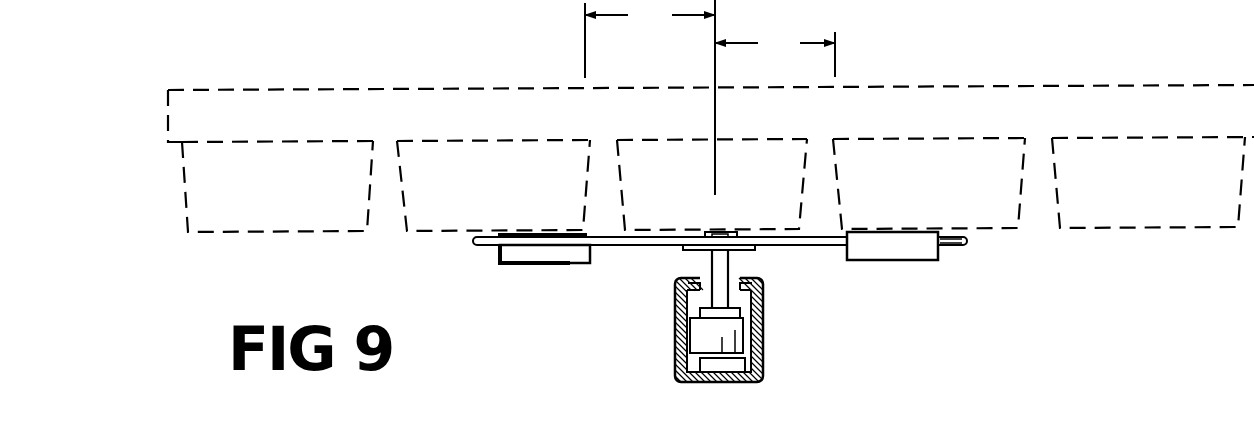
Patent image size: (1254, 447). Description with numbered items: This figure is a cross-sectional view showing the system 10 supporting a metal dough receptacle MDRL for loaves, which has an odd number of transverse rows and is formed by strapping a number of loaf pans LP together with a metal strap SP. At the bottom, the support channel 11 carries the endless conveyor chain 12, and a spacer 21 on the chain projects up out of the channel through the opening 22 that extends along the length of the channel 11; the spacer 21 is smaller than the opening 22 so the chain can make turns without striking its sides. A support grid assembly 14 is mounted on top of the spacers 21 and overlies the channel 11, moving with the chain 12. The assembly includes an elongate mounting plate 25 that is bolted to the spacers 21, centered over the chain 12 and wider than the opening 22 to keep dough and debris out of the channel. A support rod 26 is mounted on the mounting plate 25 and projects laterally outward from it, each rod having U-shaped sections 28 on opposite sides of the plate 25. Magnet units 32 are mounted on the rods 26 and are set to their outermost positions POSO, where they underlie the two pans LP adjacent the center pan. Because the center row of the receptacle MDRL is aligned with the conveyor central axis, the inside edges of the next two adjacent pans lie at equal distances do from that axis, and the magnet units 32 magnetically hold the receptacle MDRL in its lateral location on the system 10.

The system 10 is at (617, 322).
The support channel 11 is at (764, 355).
The endless conveyor chain 12 is at (697, 338).
The support grid assembly 14 is at (497, 251).
The spacer 21 is at (711, 262).
The opening 22 is at (739, 282).
The mounting plate 25 is at (736, 232).
The support rod 26 is at (964, 245).
The U-shaped section 28 is at (623, 248).
The magnet unit 32 is at (537, 257).
The metal dough receptacle for loaves MDRL is at (1067, 83).
The metal strap SP is at (917, 95).
The loaf pan LP is at (1080, 222).
The first position POSO is at (880, 188).
The distance from the central axis do is at (710, 97).